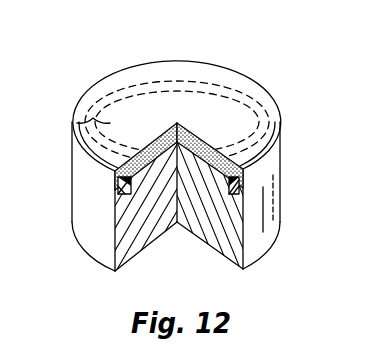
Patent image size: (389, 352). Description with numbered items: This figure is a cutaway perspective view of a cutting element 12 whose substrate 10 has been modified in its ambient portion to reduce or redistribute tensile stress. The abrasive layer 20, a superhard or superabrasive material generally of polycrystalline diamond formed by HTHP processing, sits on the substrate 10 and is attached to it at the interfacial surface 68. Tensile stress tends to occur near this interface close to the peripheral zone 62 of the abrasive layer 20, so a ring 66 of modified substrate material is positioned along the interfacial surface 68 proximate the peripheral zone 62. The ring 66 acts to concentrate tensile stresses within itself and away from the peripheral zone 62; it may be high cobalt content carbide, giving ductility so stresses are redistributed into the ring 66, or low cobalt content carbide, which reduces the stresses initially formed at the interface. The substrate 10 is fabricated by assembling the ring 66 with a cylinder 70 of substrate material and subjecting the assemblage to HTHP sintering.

The substrate 10 is at (268, 203).
The cutting element 12 is at (298, 113).
The abrasive layer 20 is at (198, 83).
The peripheral zone 62 is at (88, 118).
The ring 66 is at (246, 97).
The interfacial surface 68 is at (199, 162).
The cylinder 70 is at (84, 203).